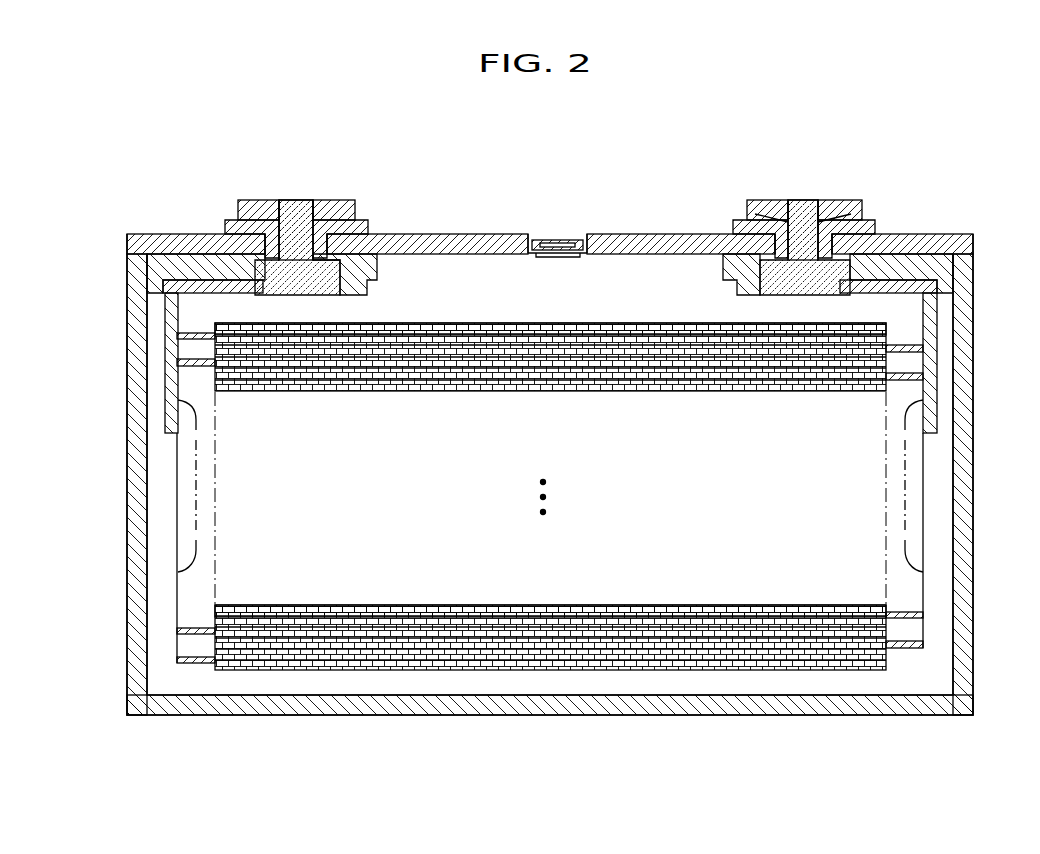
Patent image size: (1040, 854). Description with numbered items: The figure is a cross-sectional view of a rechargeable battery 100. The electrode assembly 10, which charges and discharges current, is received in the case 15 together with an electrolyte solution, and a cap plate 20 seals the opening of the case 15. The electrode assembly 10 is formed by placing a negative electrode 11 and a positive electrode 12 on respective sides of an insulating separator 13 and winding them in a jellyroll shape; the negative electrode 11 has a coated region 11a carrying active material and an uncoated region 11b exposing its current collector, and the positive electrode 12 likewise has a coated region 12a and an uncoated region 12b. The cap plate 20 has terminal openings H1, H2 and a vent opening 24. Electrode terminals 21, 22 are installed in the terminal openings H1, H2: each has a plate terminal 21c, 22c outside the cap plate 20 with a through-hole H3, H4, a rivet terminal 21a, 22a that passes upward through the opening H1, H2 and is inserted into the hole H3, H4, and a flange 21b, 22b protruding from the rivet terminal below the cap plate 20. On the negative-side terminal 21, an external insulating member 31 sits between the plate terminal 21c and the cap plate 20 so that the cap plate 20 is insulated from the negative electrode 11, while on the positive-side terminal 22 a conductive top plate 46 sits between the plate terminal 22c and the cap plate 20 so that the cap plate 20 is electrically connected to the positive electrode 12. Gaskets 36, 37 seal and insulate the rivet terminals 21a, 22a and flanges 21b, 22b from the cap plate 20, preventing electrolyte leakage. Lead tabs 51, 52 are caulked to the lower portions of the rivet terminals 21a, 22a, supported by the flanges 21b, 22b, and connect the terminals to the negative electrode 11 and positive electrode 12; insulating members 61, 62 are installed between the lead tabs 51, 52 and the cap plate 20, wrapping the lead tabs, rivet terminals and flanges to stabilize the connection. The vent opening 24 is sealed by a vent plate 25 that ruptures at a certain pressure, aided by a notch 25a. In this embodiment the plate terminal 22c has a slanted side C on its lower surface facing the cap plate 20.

The rechargeable battery 100 is at (547, 129).
The electrode assembly 10 is at (643, 686).
The negative electrode 11 is at (318, 774).
The coated region 11a is at (305, 668).
The uncoated region 11b is at (180, 664).
The positive electrode 12 is at (925, 774).
The coated region 12a is at (780, 650).
The uncoated region 12b is at (915, 650).
The separator 13 is at (533, 665).
The case 15 is at (965, 412).
The cap plate 20 is at (472, 245).
The electrode terminal 21 is at (301, 192).
The rivet terminal 21a is at (297, 265).
The flange 21b is at (375, 262).
The plate terminal 21c is at (253, 210).
The electrode terminal 22 is at (801, 192).
The rivet terminal 22a is at (805, 268).
The flange 22b is at (750, 270).
The plate terminal 22c is at (845, 210).
The vent opening 24 is at (555, 255).
The vent plate 25 is at (582, 240).
The notch 25a is at (550, 243).
The external insulating member 31 is at (362, 232).
The gasket 36 is at (232, 225).
The gasket 37 is at (872, 228).
The top plate 46 is at (738, 230).
The lead tab 51 is at (172, 318).
The lead tab 52 is at (930, 312).
The insulating member 61 is at (160, 270).
The insulating member 62 is at (940, 268).
The slanted side C is at (742, 212).
The terminal opening H1 is at (325, 210).
The terminal opening H2 is at (762, 208).
The opening H3 is at (290, 205).
The opening H4 is at (820, 210).